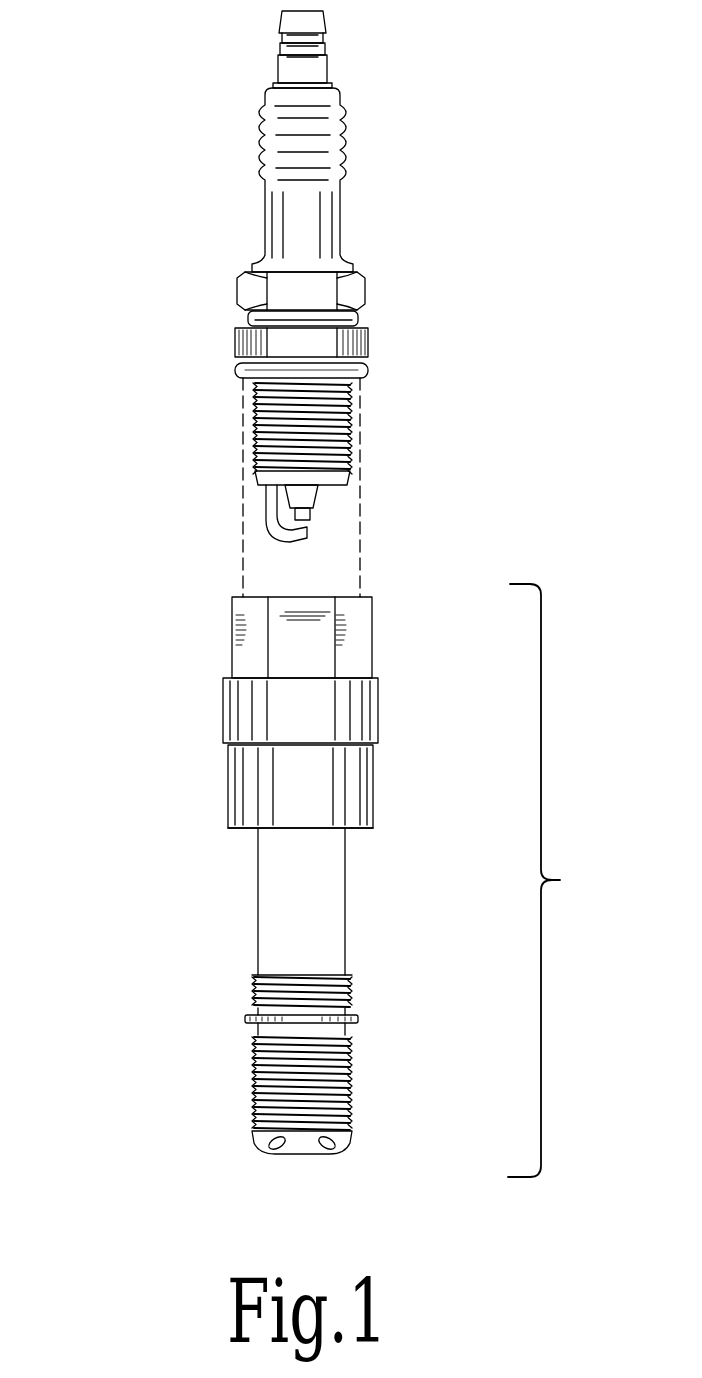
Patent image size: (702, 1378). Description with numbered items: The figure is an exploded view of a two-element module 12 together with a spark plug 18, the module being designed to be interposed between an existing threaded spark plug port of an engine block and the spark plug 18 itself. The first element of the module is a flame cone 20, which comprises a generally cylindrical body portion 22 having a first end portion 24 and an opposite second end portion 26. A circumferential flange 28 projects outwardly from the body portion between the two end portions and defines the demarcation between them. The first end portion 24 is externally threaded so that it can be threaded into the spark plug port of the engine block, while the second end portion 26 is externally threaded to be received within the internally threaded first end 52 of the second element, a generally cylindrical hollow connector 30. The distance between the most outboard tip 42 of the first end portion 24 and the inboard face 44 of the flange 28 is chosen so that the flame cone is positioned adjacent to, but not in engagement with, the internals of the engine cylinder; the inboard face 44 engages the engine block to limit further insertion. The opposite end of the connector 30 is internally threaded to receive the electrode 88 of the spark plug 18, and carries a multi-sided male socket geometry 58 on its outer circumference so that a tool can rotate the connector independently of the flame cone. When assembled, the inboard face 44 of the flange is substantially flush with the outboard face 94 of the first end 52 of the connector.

The two-element module 12 is at (551, 880).
The spark plug 18 is at (365, 290).
The flame cone 20 is at (228, 1040).
The body portion 22 is at (250, 1080).
The first end portion 24 is at (342, 1150).
The second end portion 26 is at (352, 985).
The circumferential flange 28 is at (250, 1018).
The connector 30 is at (123, 743).
The outboard tip 42 is at (300, 1154).
The inboard face 44 is at (352, 1024).
The first end 52 is at (373, 787).
The multi-sided male socket geometry 58 is at (232, 626).
The electrode 88 is at (305, 537).
The outboard face 94 is at (357, 830).